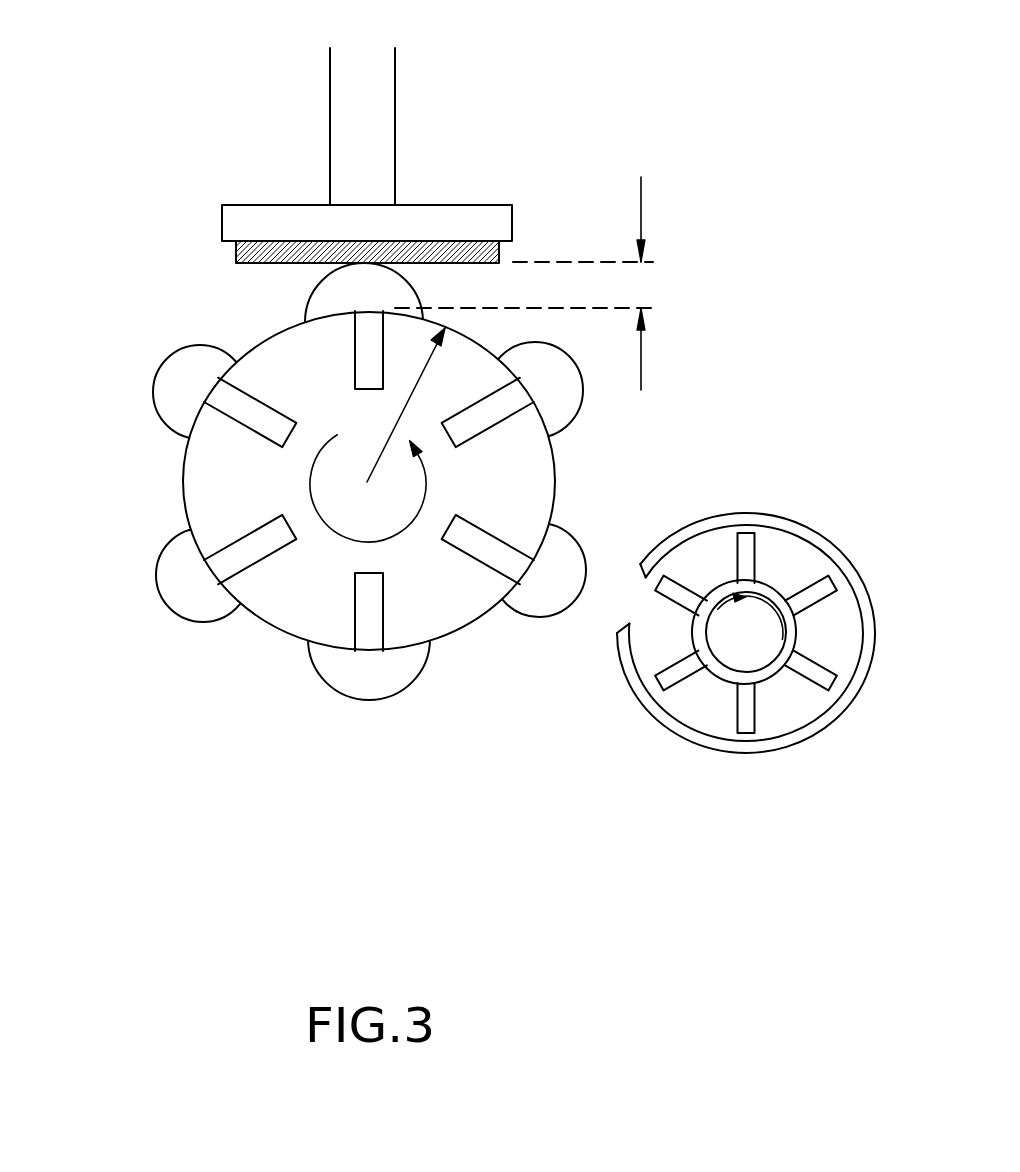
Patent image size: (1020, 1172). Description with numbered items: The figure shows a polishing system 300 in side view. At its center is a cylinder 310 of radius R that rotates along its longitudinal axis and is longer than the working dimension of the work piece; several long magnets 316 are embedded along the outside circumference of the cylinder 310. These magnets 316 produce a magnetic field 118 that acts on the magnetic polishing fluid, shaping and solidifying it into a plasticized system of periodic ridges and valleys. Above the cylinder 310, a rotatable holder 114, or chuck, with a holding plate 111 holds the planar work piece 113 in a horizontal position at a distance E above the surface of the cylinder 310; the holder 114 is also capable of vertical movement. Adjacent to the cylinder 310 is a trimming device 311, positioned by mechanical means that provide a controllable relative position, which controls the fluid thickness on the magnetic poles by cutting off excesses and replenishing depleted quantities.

The rotatable holder 114 is at (297, 120).
The holding plate 111 is at (222, 222).
The planar work piece 113 is at (235, 257).
The magnetic field 118 is at (195, 358).
The long magnets 316 is at (240, 540).
The cylinder 310 is at (292, 626).
The polishing system 300 is at (725, 179).
The trimming device 311 is at (697, 735).